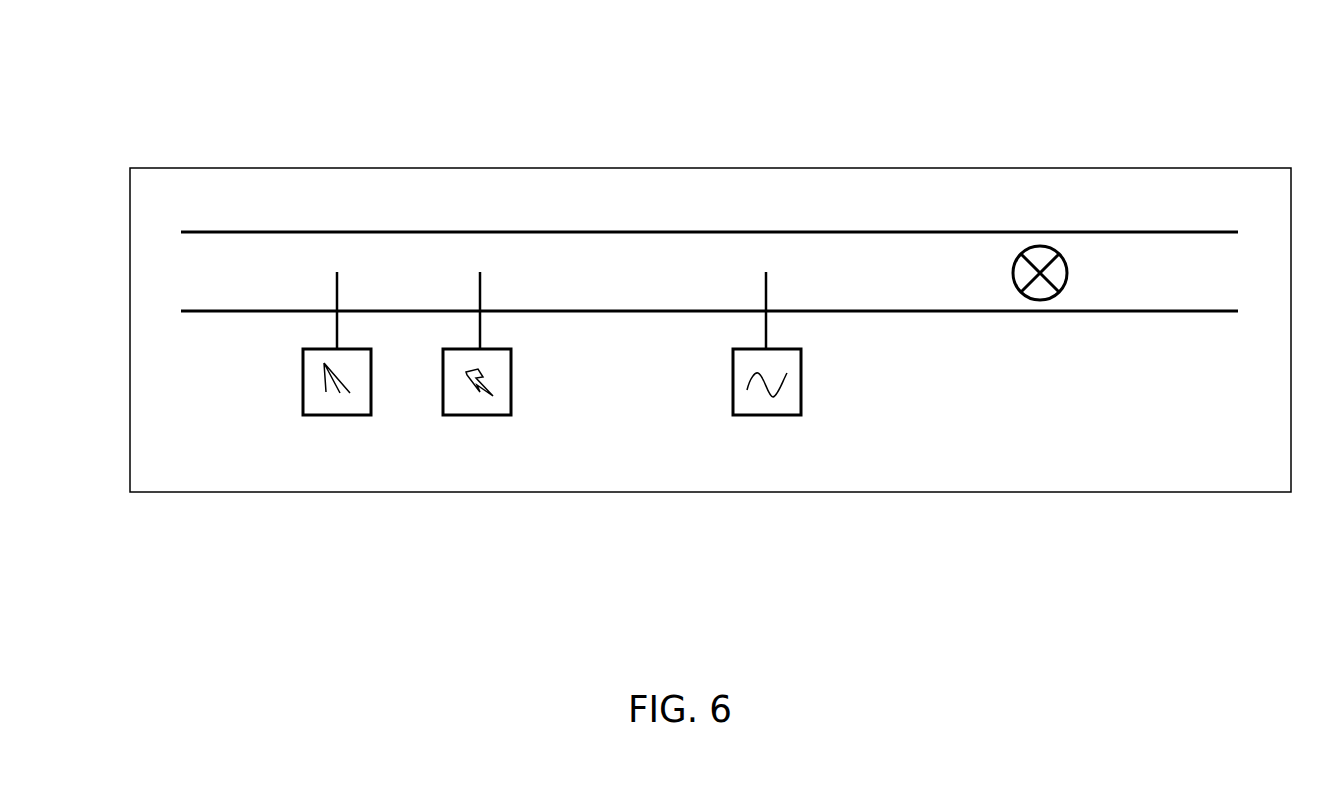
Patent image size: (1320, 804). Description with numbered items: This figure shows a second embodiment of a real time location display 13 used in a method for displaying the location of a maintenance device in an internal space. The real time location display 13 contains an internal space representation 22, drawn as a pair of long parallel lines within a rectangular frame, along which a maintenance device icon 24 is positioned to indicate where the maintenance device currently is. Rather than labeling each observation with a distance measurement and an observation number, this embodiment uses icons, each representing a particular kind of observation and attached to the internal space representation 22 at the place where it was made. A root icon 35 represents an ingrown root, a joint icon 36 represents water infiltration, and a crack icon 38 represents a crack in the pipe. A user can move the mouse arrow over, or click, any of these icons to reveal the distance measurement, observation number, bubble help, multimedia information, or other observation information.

The real time location display 13 is at (610, 193).
The internal space representation 22 is at (845, 218).
The maintenance device icon 24 is at (1040, 246).
The root icon 35 is at (337, 415).
The joint icon 36 is at (480, 415).
The crack icon 38 is at (766, 415).